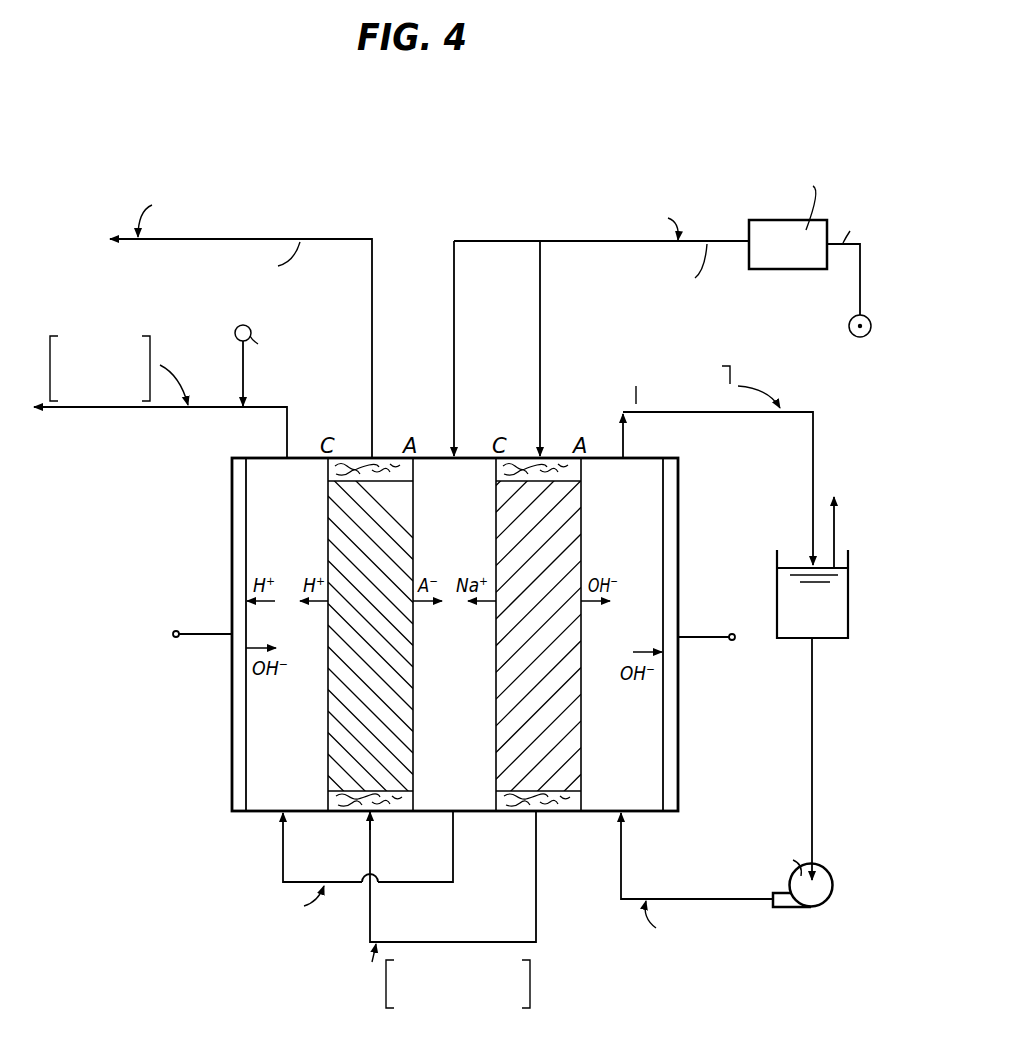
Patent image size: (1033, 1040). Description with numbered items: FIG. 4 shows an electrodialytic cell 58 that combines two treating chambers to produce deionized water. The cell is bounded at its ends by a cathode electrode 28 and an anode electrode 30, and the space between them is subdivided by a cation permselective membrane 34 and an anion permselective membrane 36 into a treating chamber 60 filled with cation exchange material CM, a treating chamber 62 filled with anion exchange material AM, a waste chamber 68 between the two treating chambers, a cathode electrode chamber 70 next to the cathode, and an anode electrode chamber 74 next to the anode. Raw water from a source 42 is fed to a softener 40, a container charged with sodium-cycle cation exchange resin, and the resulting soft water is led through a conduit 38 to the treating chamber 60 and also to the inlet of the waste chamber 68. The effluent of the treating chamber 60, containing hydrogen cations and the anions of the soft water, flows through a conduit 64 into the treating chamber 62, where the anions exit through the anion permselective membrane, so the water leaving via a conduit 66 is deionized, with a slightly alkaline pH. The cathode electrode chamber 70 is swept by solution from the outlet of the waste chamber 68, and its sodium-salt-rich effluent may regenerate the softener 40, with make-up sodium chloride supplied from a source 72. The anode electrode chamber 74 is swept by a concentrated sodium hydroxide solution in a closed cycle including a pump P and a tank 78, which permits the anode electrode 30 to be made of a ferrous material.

The cathode electrode 28 is at (232, 812).
The anode electrode 30 is at (678, 812).
The cation permselective membrane 34 is at (328, 528).
The anion permselective membrane 36 is at (413, 528).
The conduit 38 is at (545, 241).
The softener 40 is at (790, 268).
The source 42 is at (848, 330).
The cell 58 is at (271, 813).
The treating chamber 60 is at (518, 812).
The treating chamber 62 is at (355, 812).
The conduit 64 is at (536, 904).
The conduit 66 is at (372, 258).
The waste chamber 68 is at (440, 454).
The cathode electrode chamber 70 is at (266, 466).
The source 72 is at (236, 330).
The anode electrode chamber 74 is at (638, 482).
The tank 78 is at (844, 638).